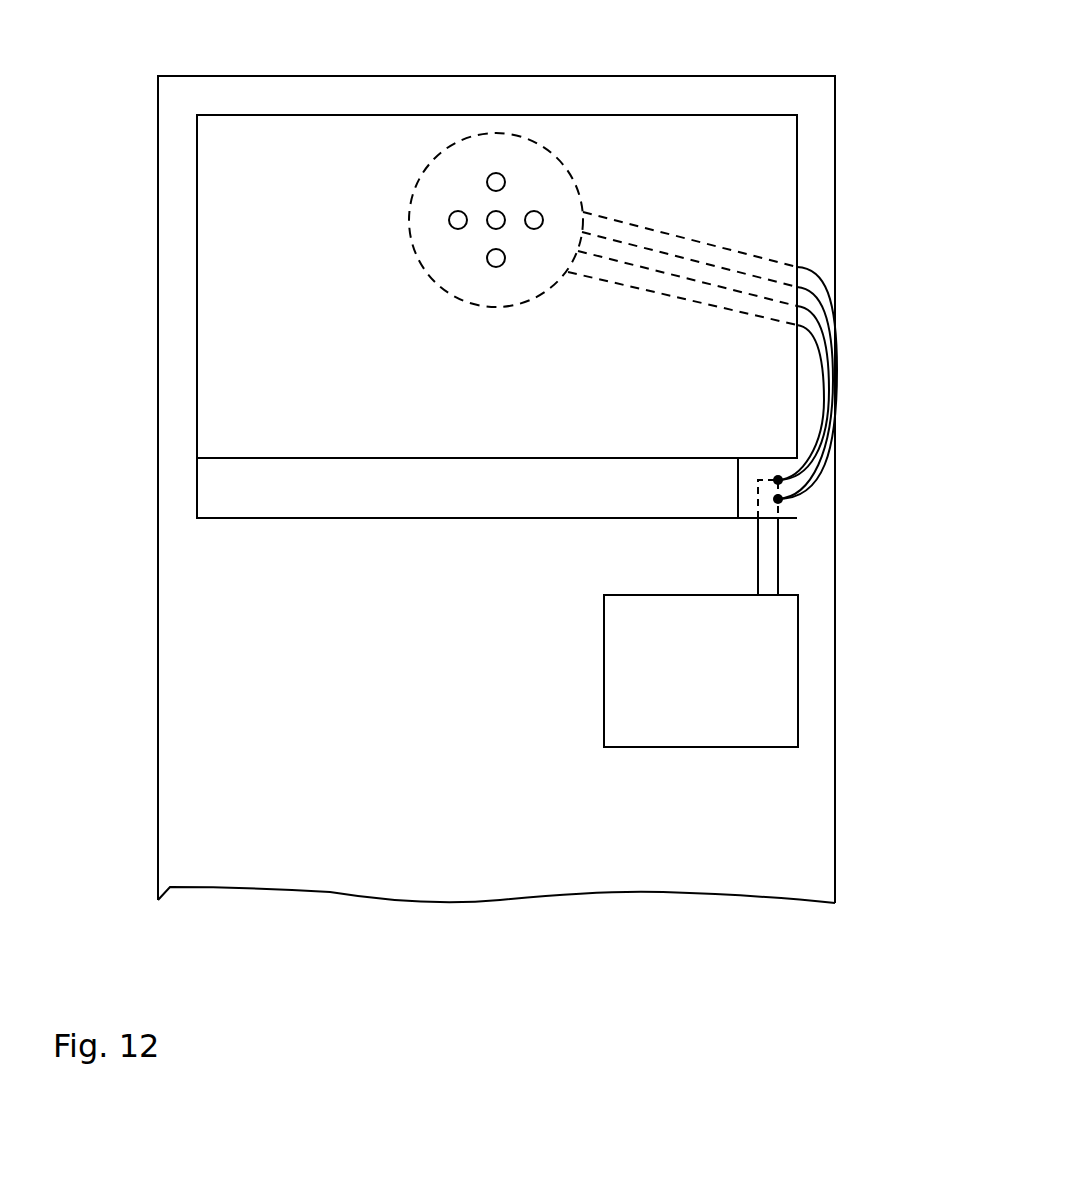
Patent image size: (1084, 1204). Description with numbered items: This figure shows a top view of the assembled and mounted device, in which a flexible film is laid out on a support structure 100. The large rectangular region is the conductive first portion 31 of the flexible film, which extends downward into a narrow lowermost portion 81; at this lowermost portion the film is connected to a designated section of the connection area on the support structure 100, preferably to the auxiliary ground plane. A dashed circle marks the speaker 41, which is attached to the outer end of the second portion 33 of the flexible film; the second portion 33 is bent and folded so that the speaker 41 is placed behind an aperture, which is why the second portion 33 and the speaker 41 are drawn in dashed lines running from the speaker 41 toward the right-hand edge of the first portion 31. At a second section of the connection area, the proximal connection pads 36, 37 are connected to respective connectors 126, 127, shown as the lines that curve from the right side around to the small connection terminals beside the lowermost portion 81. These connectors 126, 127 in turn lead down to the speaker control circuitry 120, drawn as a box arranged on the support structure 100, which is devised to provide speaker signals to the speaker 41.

The support structure 100 is at (178, 708).
The conductive first portion 31 is at (217, 345).
The lowermost portion 81 is at (445, 498).
The speaker 41 is at (547, 150).
The second portion 33 is at (624, 232).
The proximal connection pad 36 is at (865, 428).
The connector 126 is at (778, 499).
The proximal connection pad 37 is at (722, 471).
The connector 127 is at (778, 479).
The speaker control circuitry 120 is at (719, 681).